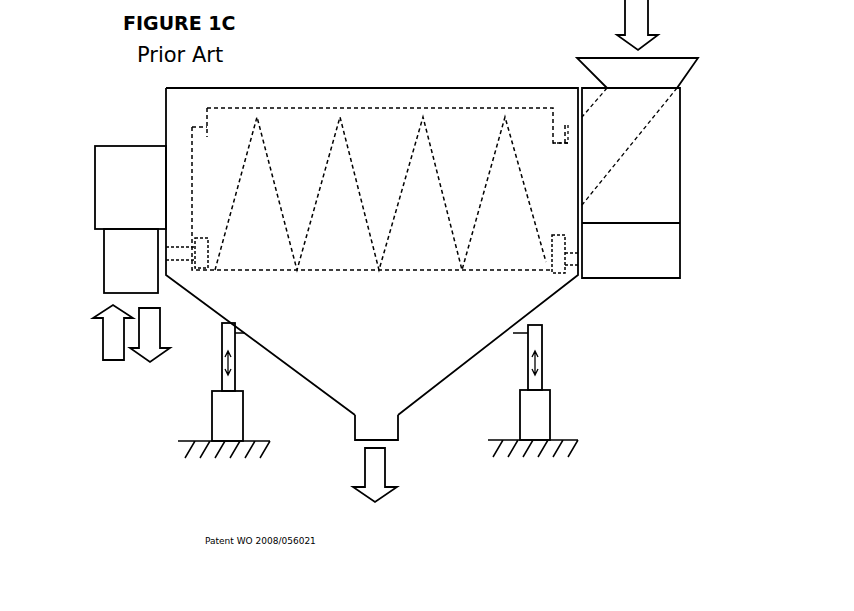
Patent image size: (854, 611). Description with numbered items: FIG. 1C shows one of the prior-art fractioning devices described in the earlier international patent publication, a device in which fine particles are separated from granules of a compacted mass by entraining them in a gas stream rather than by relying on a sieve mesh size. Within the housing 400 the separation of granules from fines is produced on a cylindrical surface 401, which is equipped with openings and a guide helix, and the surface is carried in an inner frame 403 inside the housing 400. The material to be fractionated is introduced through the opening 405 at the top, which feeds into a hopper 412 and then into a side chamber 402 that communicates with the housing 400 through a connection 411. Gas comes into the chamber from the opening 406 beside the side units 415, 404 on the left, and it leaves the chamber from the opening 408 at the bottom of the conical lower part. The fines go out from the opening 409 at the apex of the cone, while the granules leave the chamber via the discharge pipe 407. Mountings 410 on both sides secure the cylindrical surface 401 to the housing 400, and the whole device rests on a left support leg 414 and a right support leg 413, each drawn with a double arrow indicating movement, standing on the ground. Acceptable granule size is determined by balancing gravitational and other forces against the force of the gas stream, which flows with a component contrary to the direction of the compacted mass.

The housing 400 is at (165, 98).
The cylindrical surface 401 is at (372, 274).
The feed chamber 402 is at (682, 250).
The screen frame 403 is at (252, 130).
The lower side unit 404 is at (104, 268).
The opening 405 is at (663, 13).
The opening 406 is at (100, 332).
The discharge pipe 407 is at (163, 330).
The opening 408 is at (398, 480).
The opening 409 is at (403, 425).
The mounting 410 is at (207, 274).
The connection 411 is at (553, 157).
The feed hopper 412 is at (688, 78).
The right support leg 413 is at (545, 378).
The left support leg 414 is at (236, 380).
The upper side unit 415 is at (95, 188).